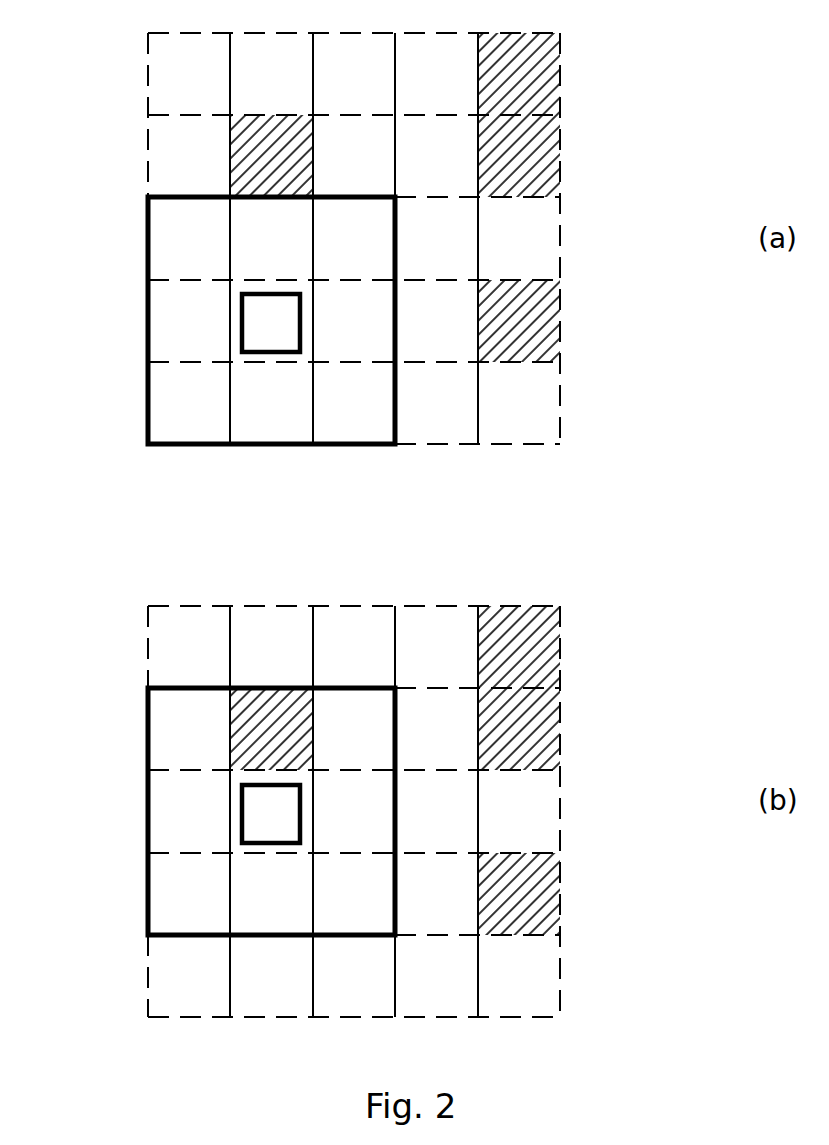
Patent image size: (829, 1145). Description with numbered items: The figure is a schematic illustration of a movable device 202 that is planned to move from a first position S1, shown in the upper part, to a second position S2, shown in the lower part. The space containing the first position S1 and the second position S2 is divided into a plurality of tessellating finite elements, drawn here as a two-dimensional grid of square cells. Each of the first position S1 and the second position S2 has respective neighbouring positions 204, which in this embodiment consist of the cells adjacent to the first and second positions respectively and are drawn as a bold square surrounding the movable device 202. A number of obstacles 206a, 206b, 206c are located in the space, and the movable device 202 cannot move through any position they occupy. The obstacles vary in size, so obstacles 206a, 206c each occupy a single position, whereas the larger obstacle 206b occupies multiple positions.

The movable device 202 is at (243, 322).
The neighbouring positions 204 is at (148, 415).
The obstacle 206a is at (230, 155).
The obstacle 206b is at (560, 73).
The obstacle 206c is at (560, 322).
The first position S1 is at (230, 350).
The second position S2 is at (230, 245).